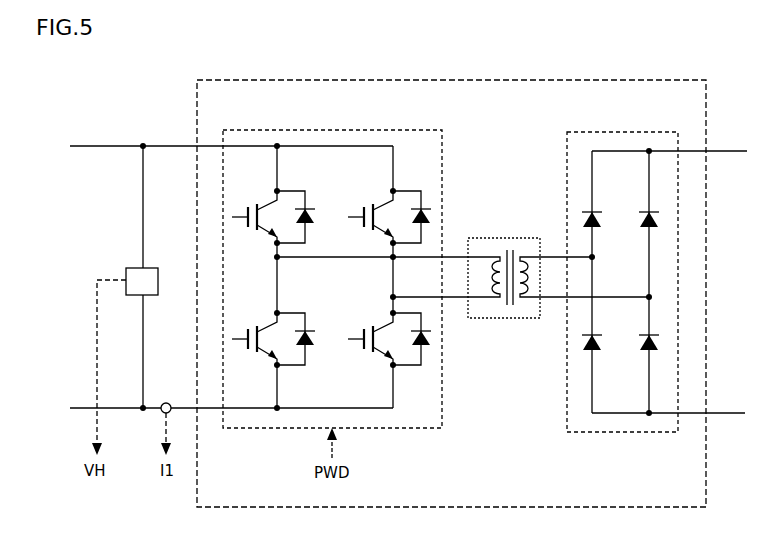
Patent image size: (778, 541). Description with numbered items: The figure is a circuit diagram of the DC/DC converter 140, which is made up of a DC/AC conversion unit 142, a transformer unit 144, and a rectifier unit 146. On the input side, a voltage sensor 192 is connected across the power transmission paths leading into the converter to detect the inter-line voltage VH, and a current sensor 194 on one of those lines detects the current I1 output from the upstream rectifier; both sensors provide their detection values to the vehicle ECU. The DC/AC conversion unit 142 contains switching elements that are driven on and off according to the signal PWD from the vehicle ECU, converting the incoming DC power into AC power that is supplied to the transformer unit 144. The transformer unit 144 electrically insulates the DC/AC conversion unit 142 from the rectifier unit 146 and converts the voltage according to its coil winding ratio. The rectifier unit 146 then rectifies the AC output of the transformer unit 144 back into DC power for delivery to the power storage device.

The DC/DC converter 140 is at (265, 80).
The DC/AC conversion unit 142 is at (405, 130).
The transformer unit 144 is at (505, 238).
The rectifier unit 146 is at (640, 132).
The voltage sensor 192 is at (131, 266).
The current sensor 194 is at (166, 402).